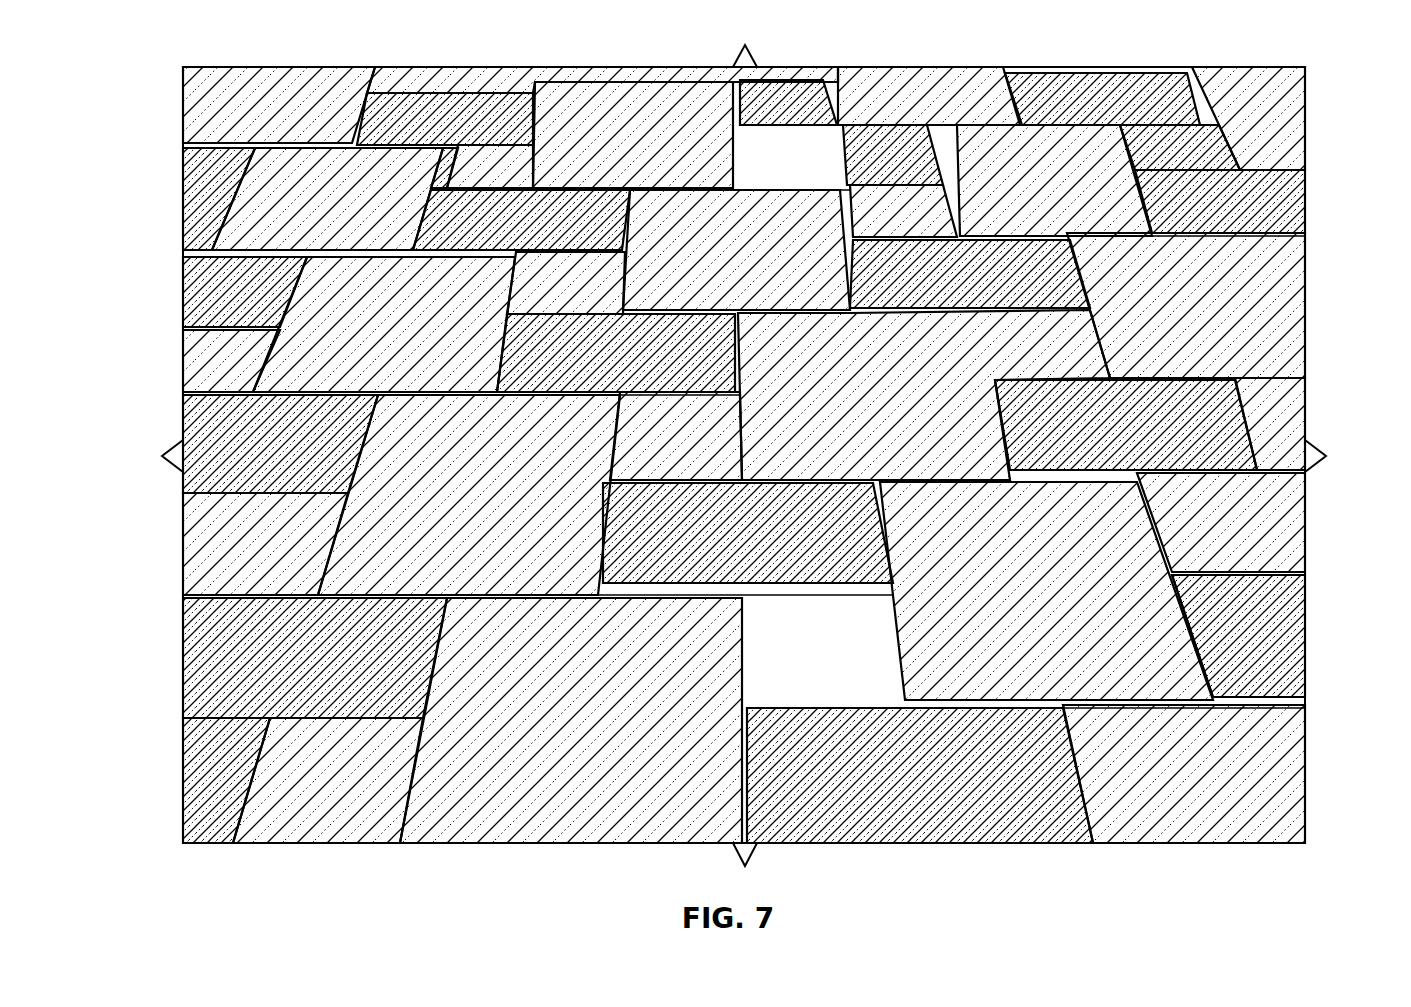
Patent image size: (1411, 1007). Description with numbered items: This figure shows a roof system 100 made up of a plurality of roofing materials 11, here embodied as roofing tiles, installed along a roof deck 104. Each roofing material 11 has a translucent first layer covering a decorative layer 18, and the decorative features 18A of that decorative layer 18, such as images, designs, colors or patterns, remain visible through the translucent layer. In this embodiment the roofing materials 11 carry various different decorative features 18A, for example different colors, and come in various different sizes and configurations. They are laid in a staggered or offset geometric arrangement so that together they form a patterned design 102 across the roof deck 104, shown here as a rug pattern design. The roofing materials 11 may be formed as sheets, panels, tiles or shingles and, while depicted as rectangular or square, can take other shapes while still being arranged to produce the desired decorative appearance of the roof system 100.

The roofing material 11 is at (751, 459).
The decorative layer 18 is at (1201, 769).
The decorative features 18A is at (1062, 589).
The roof system 100 is at (290, 812).
The patterned design 102 is at (465, 745).
The roof deck 104 is at (1305, 697).